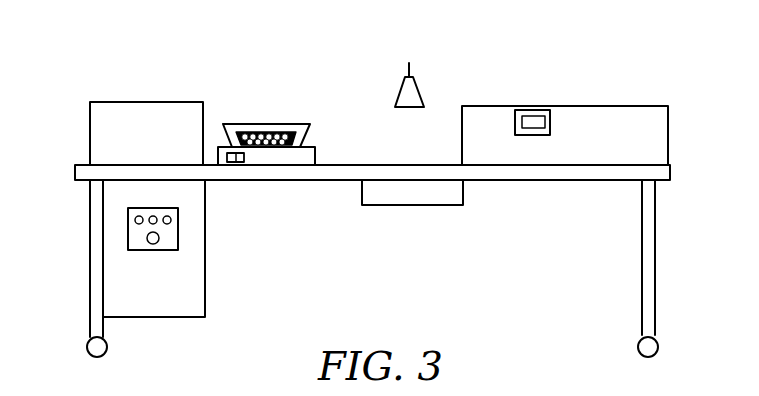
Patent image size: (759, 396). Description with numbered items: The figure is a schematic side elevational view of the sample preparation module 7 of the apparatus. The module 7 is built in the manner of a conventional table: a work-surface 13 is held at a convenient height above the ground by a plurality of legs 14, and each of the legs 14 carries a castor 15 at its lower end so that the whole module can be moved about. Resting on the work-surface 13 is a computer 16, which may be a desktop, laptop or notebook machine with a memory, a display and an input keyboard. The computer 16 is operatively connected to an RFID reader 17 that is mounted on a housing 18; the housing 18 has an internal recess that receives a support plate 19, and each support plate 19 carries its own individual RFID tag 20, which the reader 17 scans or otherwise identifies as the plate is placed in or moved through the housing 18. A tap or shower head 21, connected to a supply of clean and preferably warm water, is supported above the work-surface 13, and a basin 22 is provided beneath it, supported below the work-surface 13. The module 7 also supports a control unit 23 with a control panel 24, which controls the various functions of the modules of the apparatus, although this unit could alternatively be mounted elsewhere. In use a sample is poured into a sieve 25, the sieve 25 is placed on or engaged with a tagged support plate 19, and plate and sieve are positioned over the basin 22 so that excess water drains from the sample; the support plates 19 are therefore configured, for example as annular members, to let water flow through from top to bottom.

The preparation module 7 is at (645, 49).
The work-surface 13 is at (268, 171).
The legs 14 is at (93, 267).
The castor 15 is at (86, 350).
The computer 16 is at (142, 115).
The RFID reader 17 is at (542, 110).
The housing 18 is at (659, 120).
The support plate 19 is at (306, 158).
The RFID tag 20 is at (237, 162).
The tap or shower head 21 is at (413, 83).
The basin 22 is at (412, 196).
The control unit 23 is at (153, 303).
The control panel 24 is at (128, 222).
The sieve 25 is at (288, 123).